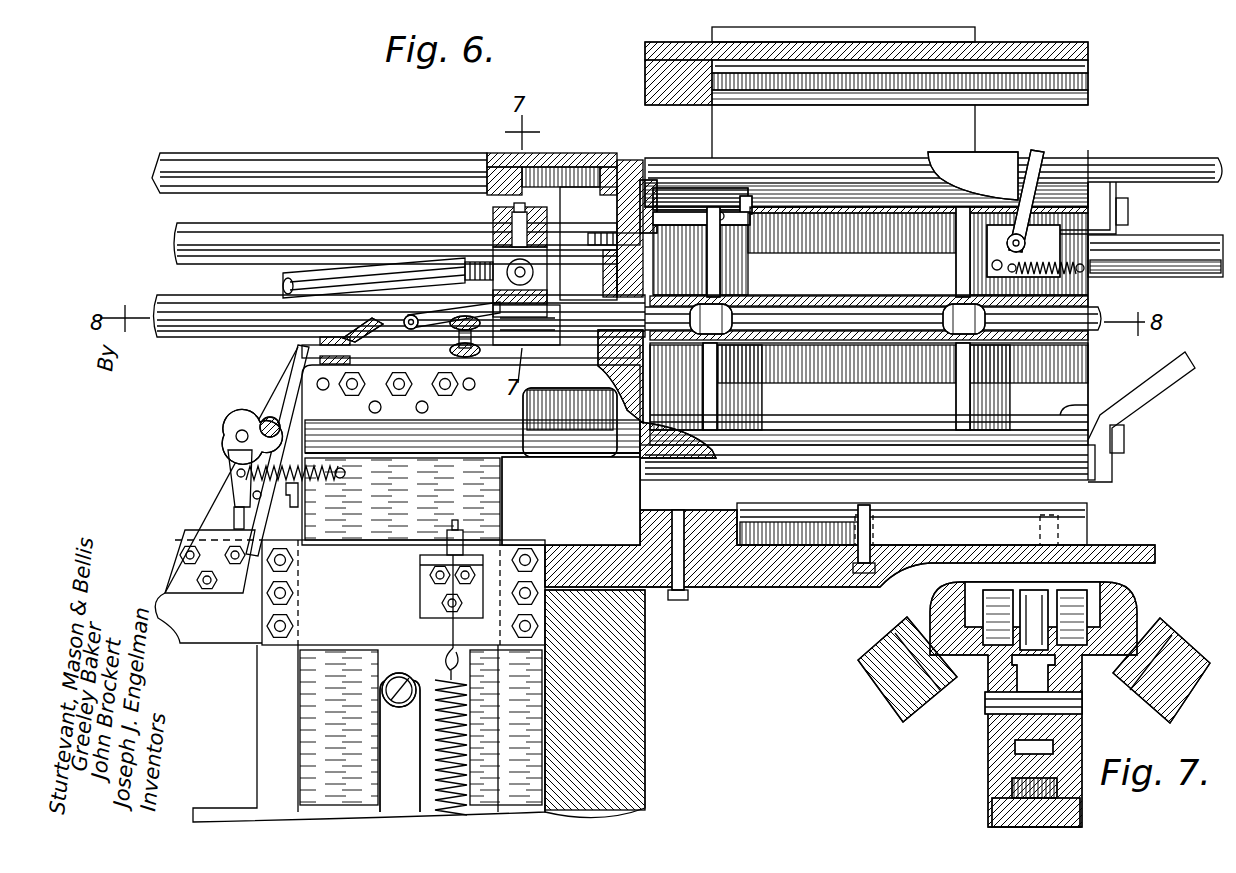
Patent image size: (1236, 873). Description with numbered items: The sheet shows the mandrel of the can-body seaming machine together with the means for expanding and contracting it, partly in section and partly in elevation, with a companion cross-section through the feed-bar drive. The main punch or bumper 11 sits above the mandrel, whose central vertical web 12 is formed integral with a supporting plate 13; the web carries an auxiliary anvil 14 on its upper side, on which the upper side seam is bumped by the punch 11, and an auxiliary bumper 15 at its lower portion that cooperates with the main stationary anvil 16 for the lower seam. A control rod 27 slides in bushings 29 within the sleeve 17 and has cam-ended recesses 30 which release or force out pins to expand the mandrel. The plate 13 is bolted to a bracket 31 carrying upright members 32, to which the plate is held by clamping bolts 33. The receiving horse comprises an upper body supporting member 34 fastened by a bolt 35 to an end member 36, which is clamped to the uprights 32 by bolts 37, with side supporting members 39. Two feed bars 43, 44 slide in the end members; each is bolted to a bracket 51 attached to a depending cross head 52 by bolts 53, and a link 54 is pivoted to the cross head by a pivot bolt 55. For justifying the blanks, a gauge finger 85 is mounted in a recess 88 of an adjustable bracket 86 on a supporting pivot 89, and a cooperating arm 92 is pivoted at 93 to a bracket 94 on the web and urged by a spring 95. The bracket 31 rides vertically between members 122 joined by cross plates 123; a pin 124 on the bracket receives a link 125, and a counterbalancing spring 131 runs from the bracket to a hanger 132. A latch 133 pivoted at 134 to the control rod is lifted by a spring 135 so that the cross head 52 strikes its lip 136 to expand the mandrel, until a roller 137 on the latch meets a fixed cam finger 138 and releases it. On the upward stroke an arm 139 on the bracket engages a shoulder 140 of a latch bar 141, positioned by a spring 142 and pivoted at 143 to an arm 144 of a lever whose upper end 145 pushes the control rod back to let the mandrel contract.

In FIG. 6, the main punch or bumper 11 is at (790, 95).
In FIG. 6, the central vertical web portion 12 is at (869, 394).
In FIG. 6, the supporting plate 13 is at (652, 398).
In FIG. 6, the auxiliary anvil 14 is at (822, 165).
In FIG. 6, the auxiliary bumper 15 is at (808, 470).
In FIG. 6, the main stationary anvil 16 is at (912, 524).
In FIG. 6, the sleeve 17 is at (875, 300).
In FIG. 6, the control rod 27 is at (848, 336).
In FIG. 6, the bushings 29 is at (775, 296).
In FIG. 6, the recesses 30 is at (712, 318).
In FIG. 6, the bracket 31 is at (570, 422).
In FIG. 6, the upright members 32 is at (628, 162).
In FIG. 6, the clamping bolts 33 is at (372, 386).
In FIG. 6, the upper body supporting member 34 is at (215, 166).
In FIG. 6, the bolt 35 is at (557, 172).
In FIG. 6, the end member 36 is at (585, 153).
In FIG. 6, the bolts 37 is at (608, 240).
In FIG. 6, the supporting members 39 is at (175, 328).
In FIG. 7, the feed bar 43 is at (868, 655).
In FIG. 6, the feed bar 44 is at (252, 233).
In FIG. 7, the feed bar 44 is at (1165, 635).
In FIG. 6, the bracket 51 is at (498, 208).
In FIG. 7, the bracket 51 is at (992, 690).
In FIG. 6, the cross head 52 is at (495, 247).
In FIG. 7, the cross head 52 is at (1005, 738).
In FIG. 7, the bolts 53 is at (1070, 592).
In FIG. 6, the link 54 is at (282, 282).
In FIG. 7, the link 54 is at (1040, 688).
In FIG. 6, the pivot bolt 55 is at (528, 232).
In FIG. 7, the pivot bolt 55 is at (1000, 703).
In FIG. 6, the gauge finger 85 is at (712, 198).
In FIG. 6, the brackets 86 is at (752, 215).
In FIG. 6, the recess 88 is at (752, 196).
In FIG. 6, the supporting pivot 89 is at (724, 220).
In FIG. 6, the arm 92 is at (1038, 152).
In FIG. 6, the pivot 93 is at (1040, 240).
In FIG. 6, the bracket 94 is at (1050, 245).
In FIG. 6, the spring 95 is at (1060, 273).
In FIG. 6, the members 122 is at (248, 760).
In FIG. 6, the cross plates 123 is at (403, 592).
In FIG. 6, the pin 124 is at (382, 686).
In FIG. 6, the link 125 is at (392, 750).
In FIG. 6, the spring 131 is at (410, 722).
In FIG. 6, the hanger 132 is at (450, 628).
In FIG. 6, the latch 133 is at (512, 346).
In FIG. 7, the latch 133 is at (1005, 812).
In FIG. 6, the pivot 134 is at (605, 395).
In FIG. 6, the spring 135 is at (460, 325).
In FIG. 6, the lip 136 is at (442, 310).
In FIG. 6, the roller 137 is at (406, 316).
In FIG. 6, the cam finger 138 is at (350, 325).
In FIG. 6, the arm 139 is at (236, 512).
In FIG. 6, the shoulder 140 is at (240, 476).
In FIG. 6, the latch bar 141 is at (232, 458).
In FIG. 6, the spring 142 is at (305, 478).
In FIG. 6, the pivot 143 is at (238, 430).
In FIG. 6, the arm 144 is at (262, 418).
In FIG. 6, the upper end of lever 145 is at (295, 352).